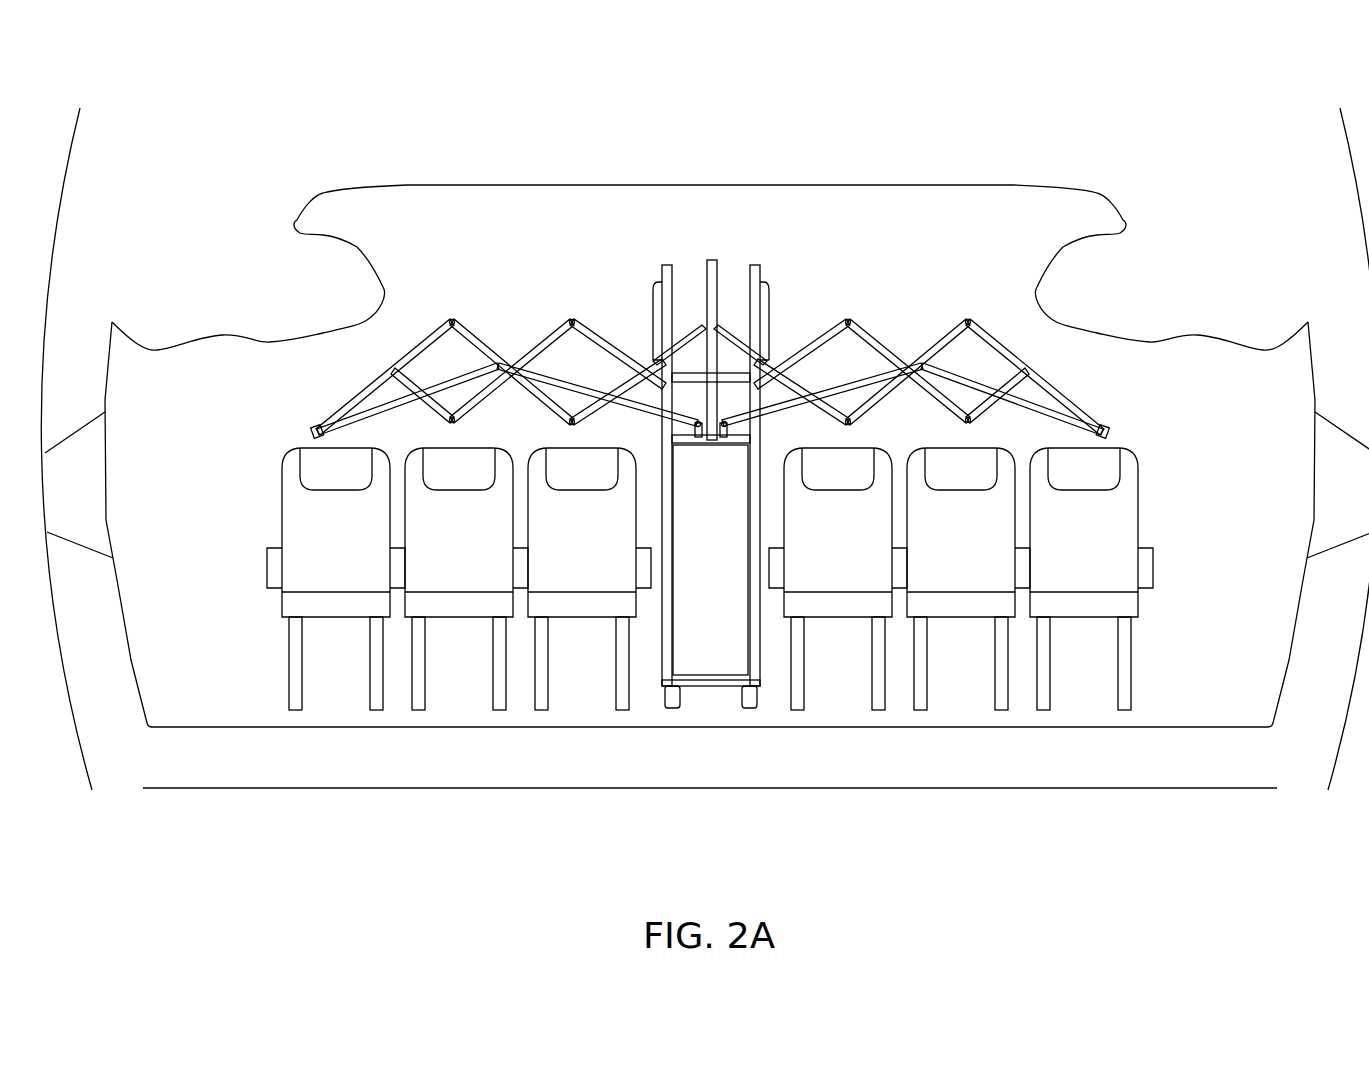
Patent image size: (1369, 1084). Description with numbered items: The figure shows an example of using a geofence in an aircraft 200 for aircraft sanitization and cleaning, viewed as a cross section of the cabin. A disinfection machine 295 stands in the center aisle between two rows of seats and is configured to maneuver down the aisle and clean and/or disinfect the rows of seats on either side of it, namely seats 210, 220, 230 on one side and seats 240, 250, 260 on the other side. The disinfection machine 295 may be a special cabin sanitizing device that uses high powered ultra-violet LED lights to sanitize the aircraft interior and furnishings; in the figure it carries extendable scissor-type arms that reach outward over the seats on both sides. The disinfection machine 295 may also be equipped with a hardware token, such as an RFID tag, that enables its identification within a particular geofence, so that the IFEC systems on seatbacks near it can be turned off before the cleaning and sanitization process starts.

The aircraft cabin 200 is at (67, 143).
The seat 210 is at (308, 578).
The seat 220 is at (431, 578).
The seat 230 is at (554, 578).
The seat 240 is at (810, 578).
The seat 250 is at (933, 578).
The seat 260 is at (1056, 578).
The disinfection machine 295 is at (683, 493).